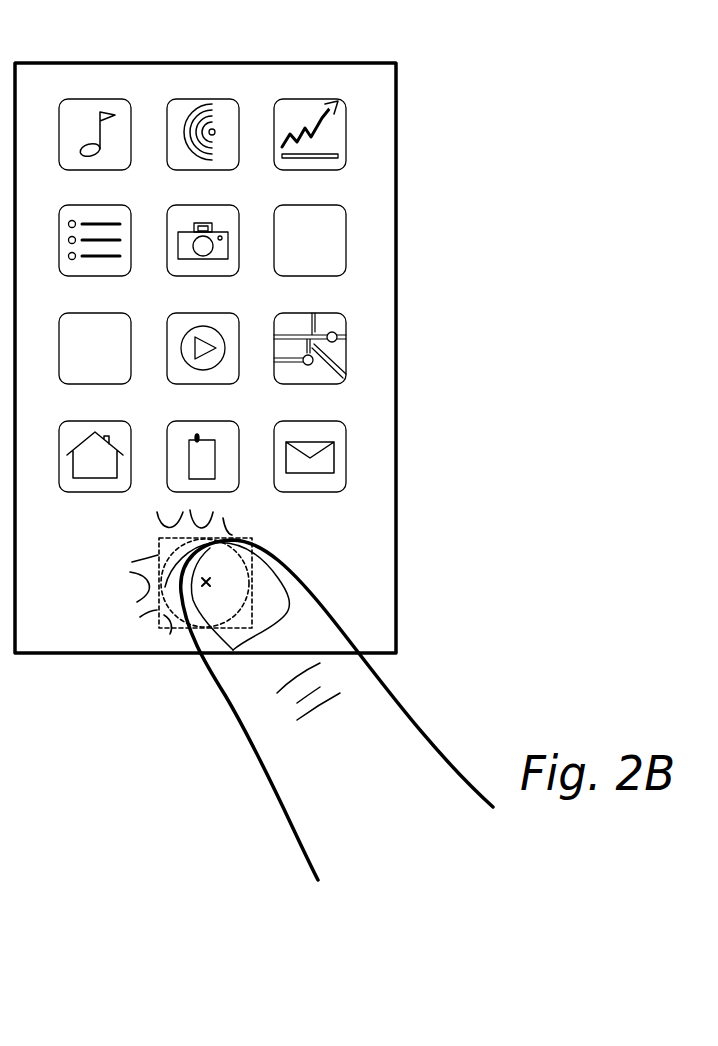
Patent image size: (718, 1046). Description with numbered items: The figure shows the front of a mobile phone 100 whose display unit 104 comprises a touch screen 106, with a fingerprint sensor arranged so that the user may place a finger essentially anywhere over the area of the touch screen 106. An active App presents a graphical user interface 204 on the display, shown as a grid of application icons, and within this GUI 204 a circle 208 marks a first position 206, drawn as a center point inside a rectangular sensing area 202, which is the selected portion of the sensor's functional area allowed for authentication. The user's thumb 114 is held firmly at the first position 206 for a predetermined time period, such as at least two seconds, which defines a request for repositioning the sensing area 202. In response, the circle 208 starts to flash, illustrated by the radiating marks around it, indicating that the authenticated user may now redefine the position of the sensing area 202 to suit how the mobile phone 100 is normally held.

The mobile phone 100 is at (515, 78).
The display unit 104 is at (294, 358).
The touch screen 106 is at (396, 230).
The graphical user interface 204 is at (362, 183).
The circle 208 is at (164, 556).
The sensing area 202 is at (173, 624).
The first position 206 is at (204, 582).
The thumb 114 is at (287, 777).